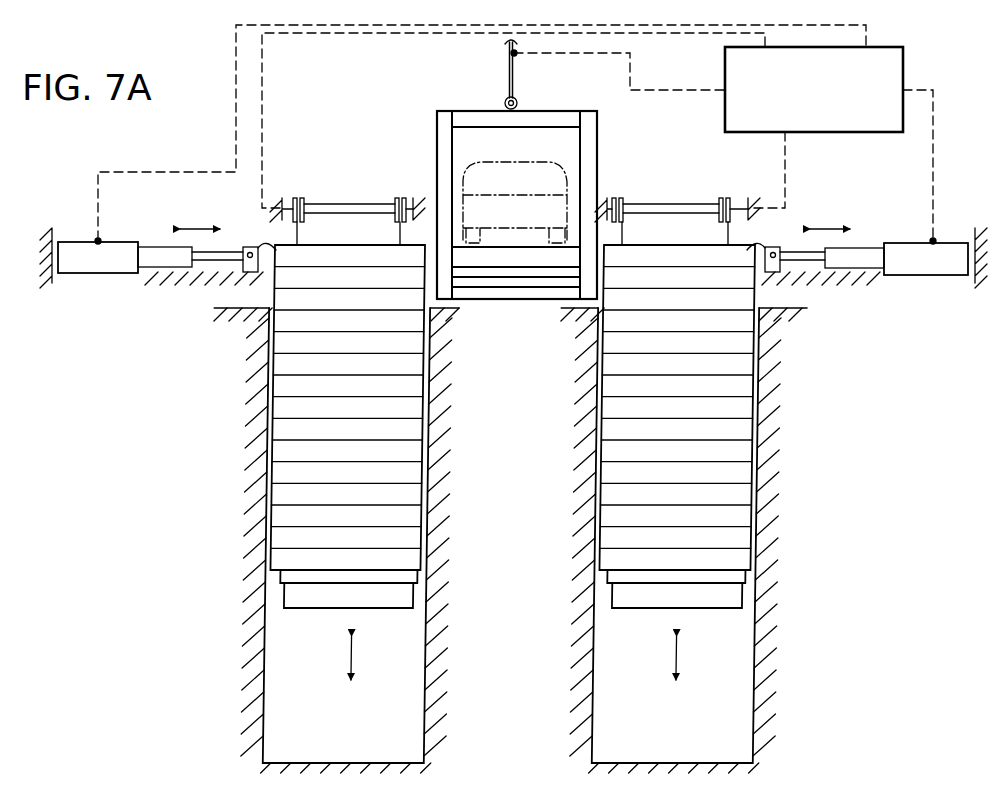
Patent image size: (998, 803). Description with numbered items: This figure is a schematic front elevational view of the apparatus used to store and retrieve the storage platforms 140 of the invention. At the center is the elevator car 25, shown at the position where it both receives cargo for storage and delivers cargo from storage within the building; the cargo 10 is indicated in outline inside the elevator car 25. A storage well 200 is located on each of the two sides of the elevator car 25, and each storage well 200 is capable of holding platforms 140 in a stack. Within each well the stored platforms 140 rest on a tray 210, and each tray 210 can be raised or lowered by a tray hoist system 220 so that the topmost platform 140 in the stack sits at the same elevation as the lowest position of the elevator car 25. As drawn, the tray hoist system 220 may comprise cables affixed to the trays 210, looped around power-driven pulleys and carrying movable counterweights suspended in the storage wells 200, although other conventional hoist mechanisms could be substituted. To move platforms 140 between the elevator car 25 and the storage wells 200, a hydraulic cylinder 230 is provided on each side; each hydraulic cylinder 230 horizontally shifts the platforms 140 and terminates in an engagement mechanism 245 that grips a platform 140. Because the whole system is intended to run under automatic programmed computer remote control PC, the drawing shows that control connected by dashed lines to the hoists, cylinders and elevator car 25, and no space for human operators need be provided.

The vehicle 10 is at (545, 182).
The elevator car 25 is at (558, 110).
The platform 140 is at (420, 340).
The storage well 200 is at (414, 716).
The tray 210 is at (293, 592).
The tray hoist system 220 is at (357, 198).
The hydraulic cylinder 230 is at (102, 258).
The engagement mechanism 245 is at (243, 266).
The programmed computer remote control PC is at (897, 62).